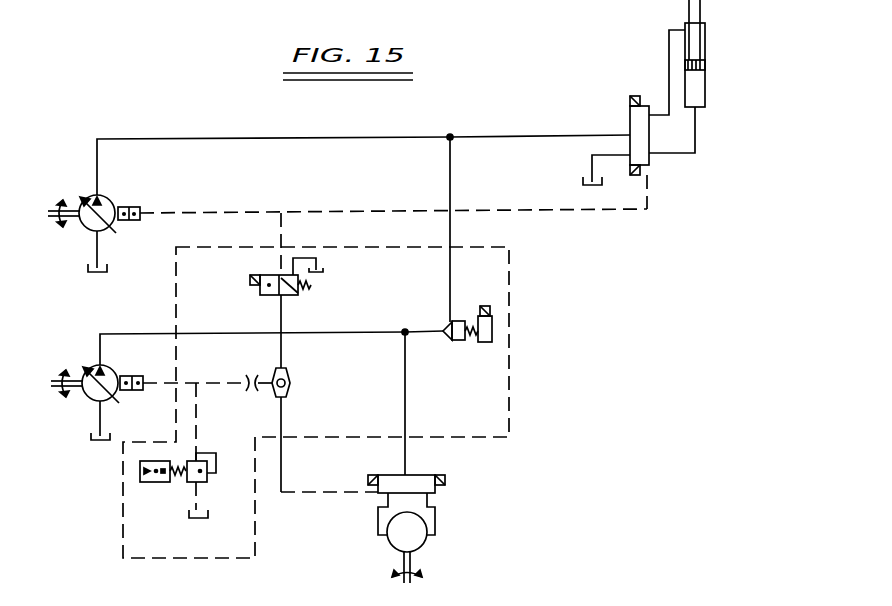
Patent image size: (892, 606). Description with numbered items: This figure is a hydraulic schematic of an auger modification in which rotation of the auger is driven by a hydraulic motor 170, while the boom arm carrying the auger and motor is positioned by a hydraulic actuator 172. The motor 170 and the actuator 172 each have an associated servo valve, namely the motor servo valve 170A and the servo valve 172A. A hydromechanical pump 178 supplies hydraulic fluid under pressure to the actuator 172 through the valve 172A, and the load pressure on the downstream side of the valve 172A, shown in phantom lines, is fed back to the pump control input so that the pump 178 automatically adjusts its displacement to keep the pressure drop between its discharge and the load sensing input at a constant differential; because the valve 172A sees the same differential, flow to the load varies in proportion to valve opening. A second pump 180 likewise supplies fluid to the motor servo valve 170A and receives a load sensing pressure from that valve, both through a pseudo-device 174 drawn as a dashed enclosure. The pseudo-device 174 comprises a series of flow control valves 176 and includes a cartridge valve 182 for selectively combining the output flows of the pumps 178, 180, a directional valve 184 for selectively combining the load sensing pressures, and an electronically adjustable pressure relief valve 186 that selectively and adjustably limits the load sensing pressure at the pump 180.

The hydraulic motor 170 is at (432, 546).
The motor servo valve 170A is at (432, 475).
The hydraulic actuator 172 is at (685, 37).
The servo valve 172A is at (630, 122).
The pseudo-device 174 is at (522, 261).
The flow control valves 176 is at (511, 322).
The hydromechanical pump 178 is at (108, 201).
The pump 180 is at (90, 403).
The cartridge valve 182 is at (492, 338).
The directional valve 184 is at (259, 295).
The pressure relief valve 186 is at (174, 492).